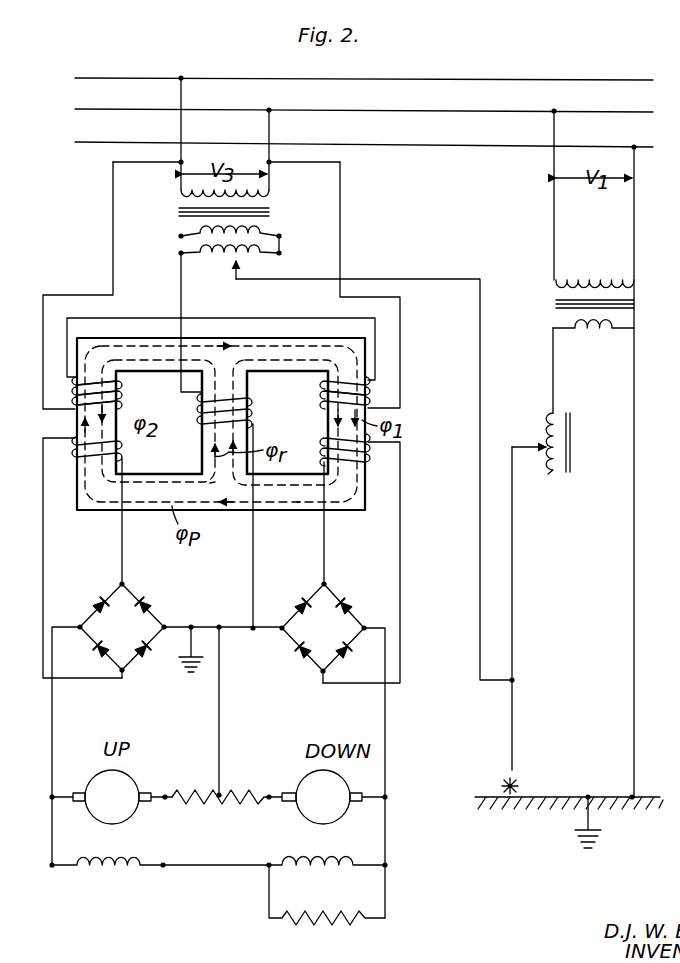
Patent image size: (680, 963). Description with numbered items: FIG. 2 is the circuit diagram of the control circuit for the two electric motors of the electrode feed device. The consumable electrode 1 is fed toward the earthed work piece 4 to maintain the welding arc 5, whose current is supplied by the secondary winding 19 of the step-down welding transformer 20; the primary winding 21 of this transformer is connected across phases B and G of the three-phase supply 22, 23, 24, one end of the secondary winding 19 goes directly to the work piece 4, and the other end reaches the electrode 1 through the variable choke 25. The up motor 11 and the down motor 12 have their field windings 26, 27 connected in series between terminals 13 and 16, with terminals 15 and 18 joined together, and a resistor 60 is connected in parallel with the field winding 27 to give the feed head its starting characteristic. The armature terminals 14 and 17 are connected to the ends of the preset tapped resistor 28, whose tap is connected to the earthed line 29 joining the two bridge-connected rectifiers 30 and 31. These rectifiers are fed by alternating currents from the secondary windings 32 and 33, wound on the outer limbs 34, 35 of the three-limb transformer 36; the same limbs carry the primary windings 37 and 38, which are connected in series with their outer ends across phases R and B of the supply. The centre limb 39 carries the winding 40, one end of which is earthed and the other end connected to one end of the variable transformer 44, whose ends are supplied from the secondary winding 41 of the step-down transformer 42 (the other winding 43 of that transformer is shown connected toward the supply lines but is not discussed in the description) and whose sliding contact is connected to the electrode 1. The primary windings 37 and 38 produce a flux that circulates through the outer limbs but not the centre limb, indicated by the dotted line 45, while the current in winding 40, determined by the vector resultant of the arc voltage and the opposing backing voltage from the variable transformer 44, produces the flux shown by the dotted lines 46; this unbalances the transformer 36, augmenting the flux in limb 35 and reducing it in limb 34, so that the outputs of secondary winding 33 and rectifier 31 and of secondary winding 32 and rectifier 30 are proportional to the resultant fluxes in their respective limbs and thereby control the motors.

The consumable electrode 1 is at (513, 723).
The work piece 4 is at (571, 795).
The welding arc 5 is at (520, 783).
The up motor 11 is at (123, 808).
The down motor 12 is at (335, 808).
The armature and field terminal 13 is at (49, 800).
The armature terminal 14 is at (164, 782).
The field terminal 15 is at (163, 868).
The armature and field terminal 16 is at (390, 797).
The armature terminal 17 is at (272, 788).
The field terminal 18 is at (266, 871).
The secondary winding 19 is at (596, 338).
The step-down welding transformer 20 is at (636, 306).
The primary winding 21 is at (601, 262).
The three-phase supply line 22 is at (490, 66).
The three-phase supply line 23 is at (518, 112).
The three-phase supply line 24 is at (444, 147).
The variable choke 25 is at (546, 424).
The field winding 26 is at (110, 870).
The field winding 27 is at (320, 872).
The preset tapped resistor 28 is at (221, 801).
The earthed line 29 is at (200, 624).
The bridge-connected rectifier 30 is at (133, 634).
The bridge-connected rectifier 31 is at (334, 639).
The secondary winding 32 is at (124, 452).
The secondary winding 33 is at (376, 455).
The outer limb 34 is at (75, 424).
The outer limb 35 is at (402, 413).
The three-limb transformer 36 is at (303, 395).
The primary winding 37 is at (124, 396).
The primary winding 38 is at (380, 393).
The centre limb 39 is at (214, 465).
The winding 40 is at (256, 408).
The secondary winding 41 is at (181, 245).
The step-down transformer 42 is at (270, 212).
The primary winding 43 is at (269, 189).
The variable transformer 44 is at (260, 261).
The dotted line 45 is at (298, 504).
The dotted lines 46 is at (167, 480).
The resistor 60 is at (330, 922).